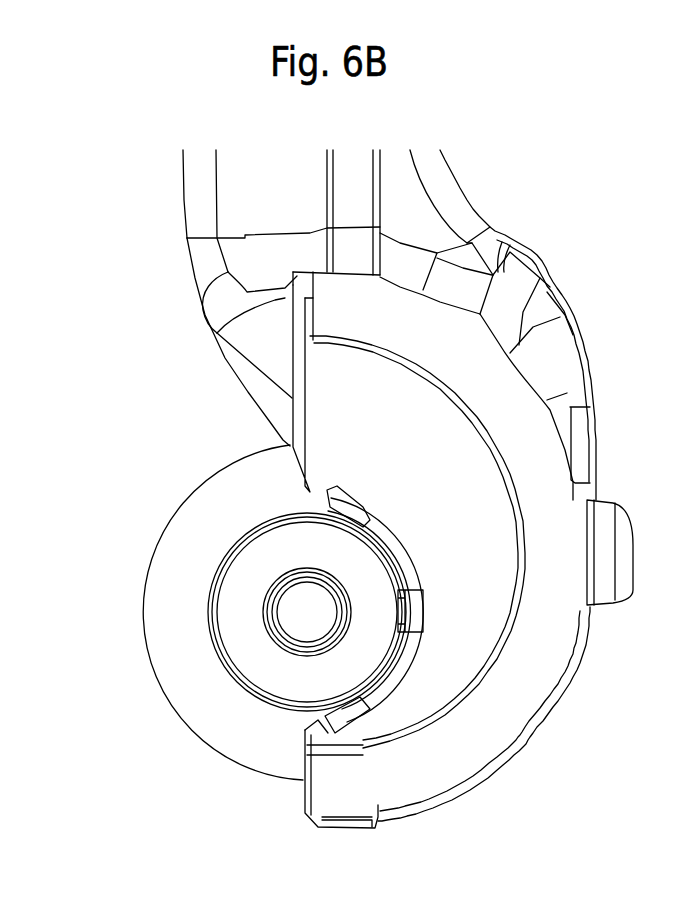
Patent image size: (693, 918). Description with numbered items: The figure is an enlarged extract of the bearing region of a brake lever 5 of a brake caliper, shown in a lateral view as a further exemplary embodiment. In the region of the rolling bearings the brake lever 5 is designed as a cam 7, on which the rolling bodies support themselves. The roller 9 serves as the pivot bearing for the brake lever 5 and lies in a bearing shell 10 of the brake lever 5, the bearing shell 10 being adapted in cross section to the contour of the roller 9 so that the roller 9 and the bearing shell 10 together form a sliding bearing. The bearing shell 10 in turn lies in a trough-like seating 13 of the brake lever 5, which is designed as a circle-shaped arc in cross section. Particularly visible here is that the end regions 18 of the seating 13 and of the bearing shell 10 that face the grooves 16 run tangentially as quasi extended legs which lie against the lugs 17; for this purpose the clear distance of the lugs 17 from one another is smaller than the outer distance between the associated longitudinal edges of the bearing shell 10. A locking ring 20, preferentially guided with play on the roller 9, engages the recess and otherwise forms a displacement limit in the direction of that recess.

The brake lever 5 is at (237, 210).
The cam 7 is at (505, 410).
The roller 9 is at (268, 660).
The bearing shell 10 is at (432, 623).
The seating 13 is at (410, 667).
The grooves 16 is at (328, 492).
The lugs 17 is at (310, 492).
The end regions 18 is at (360, 503).
The locking ring 20 is at (185, 605).